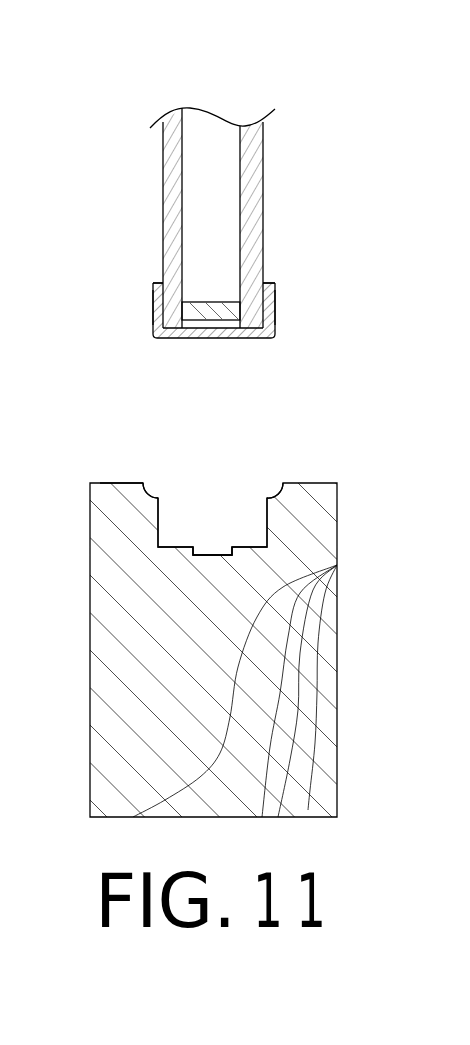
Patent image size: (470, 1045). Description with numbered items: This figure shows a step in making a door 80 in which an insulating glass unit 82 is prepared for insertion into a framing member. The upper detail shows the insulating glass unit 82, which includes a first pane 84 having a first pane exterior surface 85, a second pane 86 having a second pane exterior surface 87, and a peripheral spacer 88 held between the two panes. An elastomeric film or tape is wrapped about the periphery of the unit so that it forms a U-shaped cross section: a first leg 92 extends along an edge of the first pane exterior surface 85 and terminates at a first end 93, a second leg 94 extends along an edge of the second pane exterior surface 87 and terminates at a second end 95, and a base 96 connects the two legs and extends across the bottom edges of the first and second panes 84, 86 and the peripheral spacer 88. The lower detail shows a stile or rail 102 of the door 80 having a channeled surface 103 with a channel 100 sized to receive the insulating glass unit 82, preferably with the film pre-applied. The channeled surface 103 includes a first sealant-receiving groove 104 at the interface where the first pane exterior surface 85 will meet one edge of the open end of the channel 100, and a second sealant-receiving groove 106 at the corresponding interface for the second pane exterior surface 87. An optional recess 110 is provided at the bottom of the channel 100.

The door 80 is at (232, 642).
The insulating glass unit 82 is at (212, 210).
The first pane 84 is at (170, 152).
The first pane exterior surface 85 is at (166, 197).
The second pane 86 is at (257, 152).
The second pane exterior surface 87 is at (262, 197).
The peripheral spacer 88 is at (213, 304).
The first leg 92 is at (157, 309).
The first end 93 is at (158, 284).
The second leg 94 is at (270, 308).
The second end 95 is at (270, 284).
The base 96 is at (213, 339).
The channel 100 is at (145, 520).
The stile or rail 102 is at (98, 652).
The channeled surface 103 is at (115, 482).
The first sealant-receiving groove 104 is at (153, 492).
The second sealant-receiving groove 106 is at (276, 492).
The recess 110 is at (213, 552).